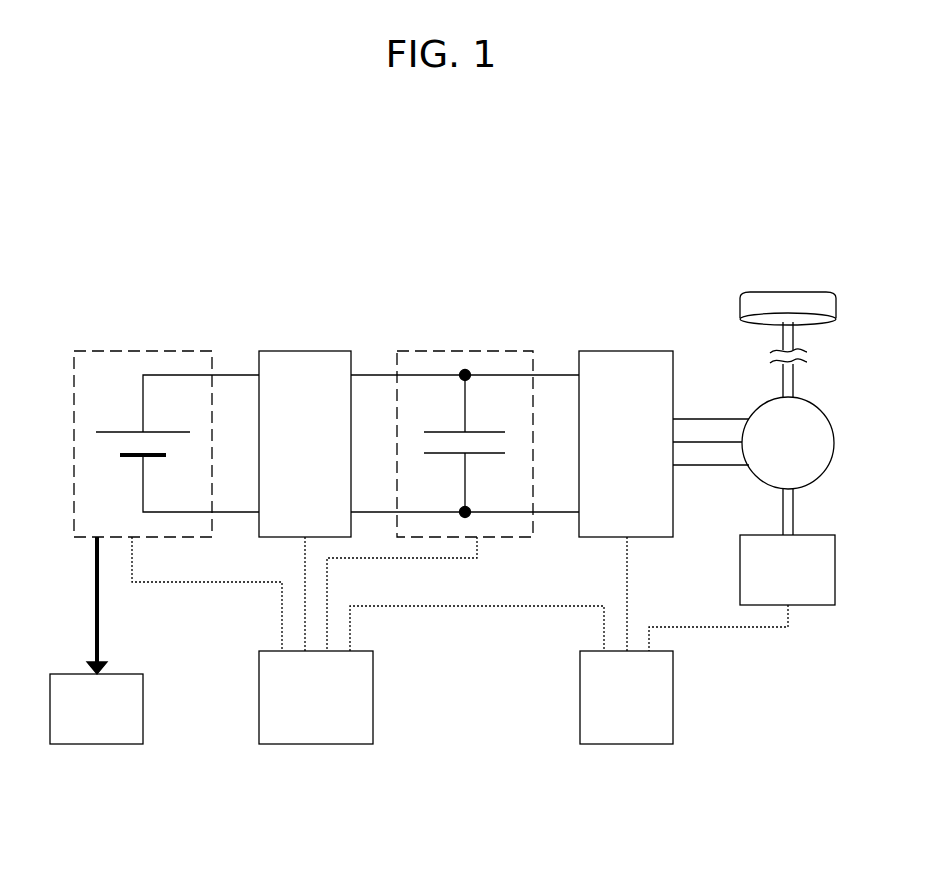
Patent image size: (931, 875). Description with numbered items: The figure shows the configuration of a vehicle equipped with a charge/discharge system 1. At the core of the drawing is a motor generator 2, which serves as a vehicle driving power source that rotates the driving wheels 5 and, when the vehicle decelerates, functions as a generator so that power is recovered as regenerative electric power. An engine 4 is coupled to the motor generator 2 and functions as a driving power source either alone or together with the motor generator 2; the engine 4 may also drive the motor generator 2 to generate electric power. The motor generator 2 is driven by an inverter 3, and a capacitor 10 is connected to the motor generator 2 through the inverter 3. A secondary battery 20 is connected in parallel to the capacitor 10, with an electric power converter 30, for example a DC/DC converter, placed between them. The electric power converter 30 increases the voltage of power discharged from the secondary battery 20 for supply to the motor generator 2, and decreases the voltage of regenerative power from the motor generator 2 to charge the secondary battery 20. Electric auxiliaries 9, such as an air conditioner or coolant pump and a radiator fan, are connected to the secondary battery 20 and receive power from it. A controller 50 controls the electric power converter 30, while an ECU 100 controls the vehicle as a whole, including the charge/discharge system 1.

The charge/discharge system 1 is at (700, 227).
The motor generator 2 is at (757, 402).
The inverter 3 is at (627, 351).
The engine 4 is at (740, 572).
The driving wheels 5 is at (739, 306).
The electric auxiliaries 9 is at (143, 695).
The capacitor 10 is at (465, 351).
The secondary battery 20 is at (140, 351).
The electric power converter 30 is at (305, 351).
The controller 50 is at (373, 694).
The ECU 100 is at (673, 694).